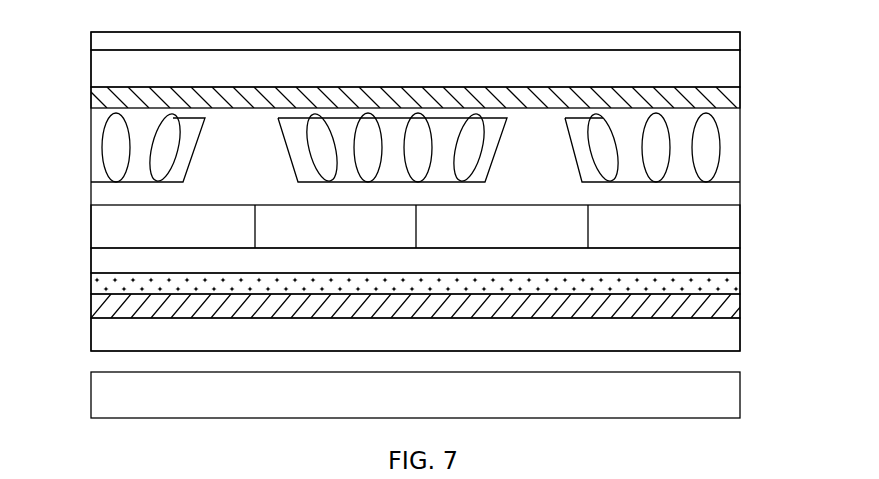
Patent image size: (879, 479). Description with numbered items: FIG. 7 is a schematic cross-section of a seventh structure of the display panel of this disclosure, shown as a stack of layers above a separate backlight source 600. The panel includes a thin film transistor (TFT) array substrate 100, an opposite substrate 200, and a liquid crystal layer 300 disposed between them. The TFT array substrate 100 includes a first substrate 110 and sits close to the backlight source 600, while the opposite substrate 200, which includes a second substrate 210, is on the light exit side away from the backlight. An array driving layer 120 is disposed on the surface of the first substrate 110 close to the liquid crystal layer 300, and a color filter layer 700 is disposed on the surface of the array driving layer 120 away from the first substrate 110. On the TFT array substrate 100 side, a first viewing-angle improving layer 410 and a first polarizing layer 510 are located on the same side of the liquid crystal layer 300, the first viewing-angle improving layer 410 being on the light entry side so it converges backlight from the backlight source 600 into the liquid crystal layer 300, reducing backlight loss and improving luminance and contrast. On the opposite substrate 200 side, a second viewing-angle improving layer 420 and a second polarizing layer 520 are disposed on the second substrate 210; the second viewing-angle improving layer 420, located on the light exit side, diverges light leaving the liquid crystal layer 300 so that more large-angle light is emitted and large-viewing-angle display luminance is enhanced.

The thin film transistor (TFT) array substrate 100 is at (422, 266).
The first substrate 110 is at (109, 334).
The array driving layer 120 is at (109, 258).
The opposite substrate 200 is at (424, 66).
The second substrate 210 is at (109, 67).
The liquid crystal layer 300 is at (767, 108).
The first viewing-angle improving layer 410 is at (109, 307).
The second viewing-angle improving layer 420 is at (109, 98).
The first polarizing layer 510 is at (109, 285).
The second polarizing layer 520 is at (109, 42).
The backlight source 600 is at (109, 395).
The color filter layer 700 is at (109, 223).